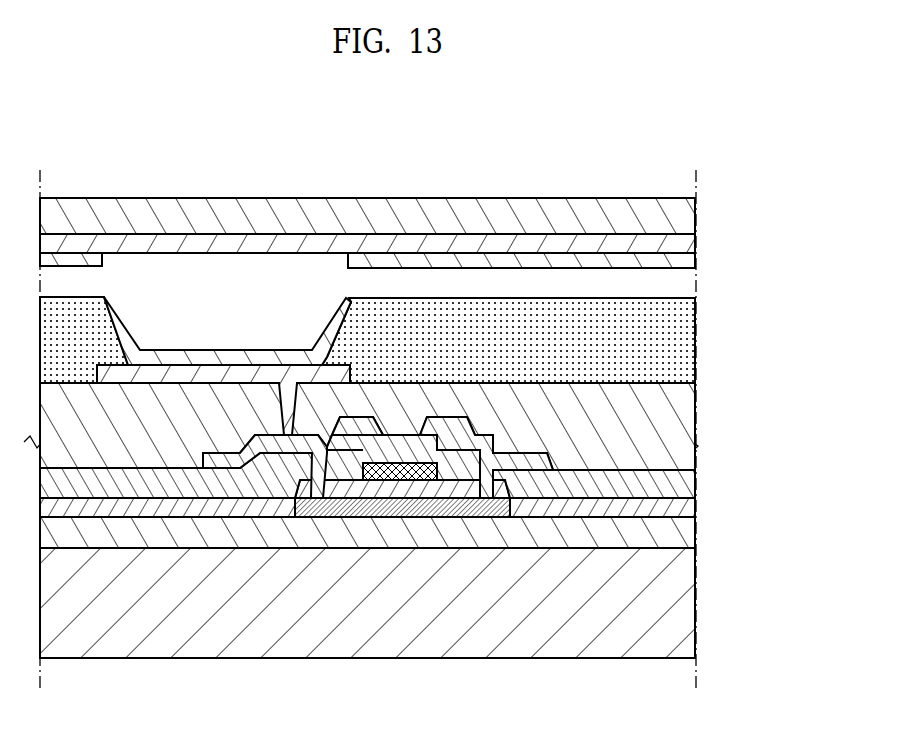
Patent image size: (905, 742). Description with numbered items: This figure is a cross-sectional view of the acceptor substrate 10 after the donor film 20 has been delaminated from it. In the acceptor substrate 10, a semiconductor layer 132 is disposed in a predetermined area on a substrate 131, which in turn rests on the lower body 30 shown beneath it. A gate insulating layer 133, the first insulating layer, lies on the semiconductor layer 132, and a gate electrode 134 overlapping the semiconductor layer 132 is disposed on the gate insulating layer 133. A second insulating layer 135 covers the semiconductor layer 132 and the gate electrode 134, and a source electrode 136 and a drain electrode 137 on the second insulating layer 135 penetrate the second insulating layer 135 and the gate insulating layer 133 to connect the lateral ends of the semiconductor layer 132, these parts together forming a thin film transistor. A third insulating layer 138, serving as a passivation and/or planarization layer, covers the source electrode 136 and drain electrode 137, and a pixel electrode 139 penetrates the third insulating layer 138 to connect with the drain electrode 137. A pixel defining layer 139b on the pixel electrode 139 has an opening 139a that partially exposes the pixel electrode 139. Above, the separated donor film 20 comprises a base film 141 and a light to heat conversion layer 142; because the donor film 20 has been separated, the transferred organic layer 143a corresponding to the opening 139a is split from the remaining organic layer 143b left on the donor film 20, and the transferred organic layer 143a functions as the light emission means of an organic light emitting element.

The acceptor substrate 10 is at (411, 431).
The donor film 20 is at (425, 231).
The substrate 30 is at (690, 614).
The substrate 131 is at (690, 527).
The semiconductor layer 132 is at (347, 505).
The gate insulating layer 133 is at (690, 505).
The gate electrode 134 is at (403, 475).
The second insulating layer 135 is at (690, 476).
The source electrode 136 is at (515, 445).
The drain electrode 137 is at (272, 447).
The third insulating layer 138 is at (690, 404).
The pixel electrode 139 is at (176, 372).
The opening 139a is at (251, 333).
The pixel defining layer 139b is at (690, 339).
The base film 141 is at (690, 214).
The light to heat conversion layer 142 is at (690, 244).
The transferred organic layer 143a is at (223, 358).
The remaining organic layer 143b is at (461, 262).